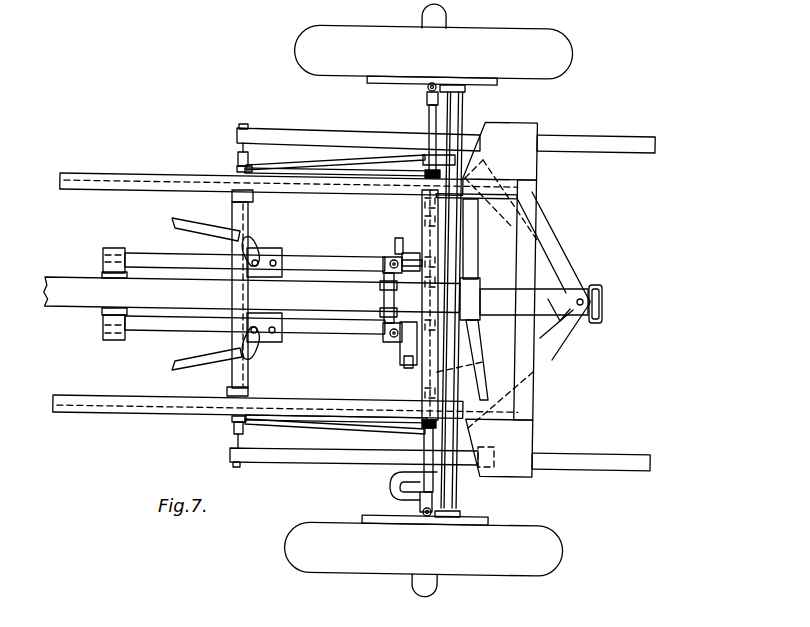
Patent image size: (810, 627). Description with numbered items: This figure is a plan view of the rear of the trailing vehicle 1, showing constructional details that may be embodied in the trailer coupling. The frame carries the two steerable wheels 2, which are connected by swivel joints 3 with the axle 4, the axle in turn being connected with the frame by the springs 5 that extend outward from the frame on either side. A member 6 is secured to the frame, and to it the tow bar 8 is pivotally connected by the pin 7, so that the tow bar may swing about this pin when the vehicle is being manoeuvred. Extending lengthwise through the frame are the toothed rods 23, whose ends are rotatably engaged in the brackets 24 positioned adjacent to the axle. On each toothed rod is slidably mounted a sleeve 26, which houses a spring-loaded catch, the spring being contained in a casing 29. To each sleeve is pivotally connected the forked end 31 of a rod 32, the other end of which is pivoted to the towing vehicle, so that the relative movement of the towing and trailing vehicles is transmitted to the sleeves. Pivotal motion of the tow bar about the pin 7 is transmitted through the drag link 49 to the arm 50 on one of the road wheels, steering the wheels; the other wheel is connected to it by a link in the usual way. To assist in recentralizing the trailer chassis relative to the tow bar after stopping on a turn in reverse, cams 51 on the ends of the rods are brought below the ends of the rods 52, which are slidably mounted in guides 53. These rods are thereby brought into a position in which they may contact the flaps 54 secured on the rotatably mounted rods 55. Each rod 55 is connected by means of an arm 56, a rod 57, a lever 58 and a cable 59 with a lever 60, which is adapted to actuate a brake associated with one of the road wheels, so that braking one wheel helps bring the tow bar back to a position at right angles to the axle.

The trailing vehicle 1 is at (157, 405).
The steerable wheels 2 is at (530, 40).
The swivel joints 3 is at (436, 83).
The axle 4 is at (437, 120).
The springs 5 is at (606, 143).
The member 6 is at (548, 252).
The pin 7 is at (585, 303).
The tow bar 8 is at (565, 325).
The toothed rods 23 is at (338, 330).
The brackets 24 is at (413, 253).
The sleeve 26 is at (270, 252).
The casing 29 is at (277, 262).
The forked end 31 is at (253, 240).
The rod 32 is at (182, 230).
The drag link 49 is at (473, 338).
The arm 50 is at (393, 480).
The cams 51 is at (384, 300).
The rods 52 is at (390, 262).
The guides 53 is at (436, 264).
The flaps 54 is at (394, 252).
The rods 55 is at (438, 222).
The arm 56 is at (424, 172).
The rod 57 is at (340, 168).
The lever 58 is at (237, 166).
The cable 59 is at (308, 163).
The lever 60 is at (450, 158).